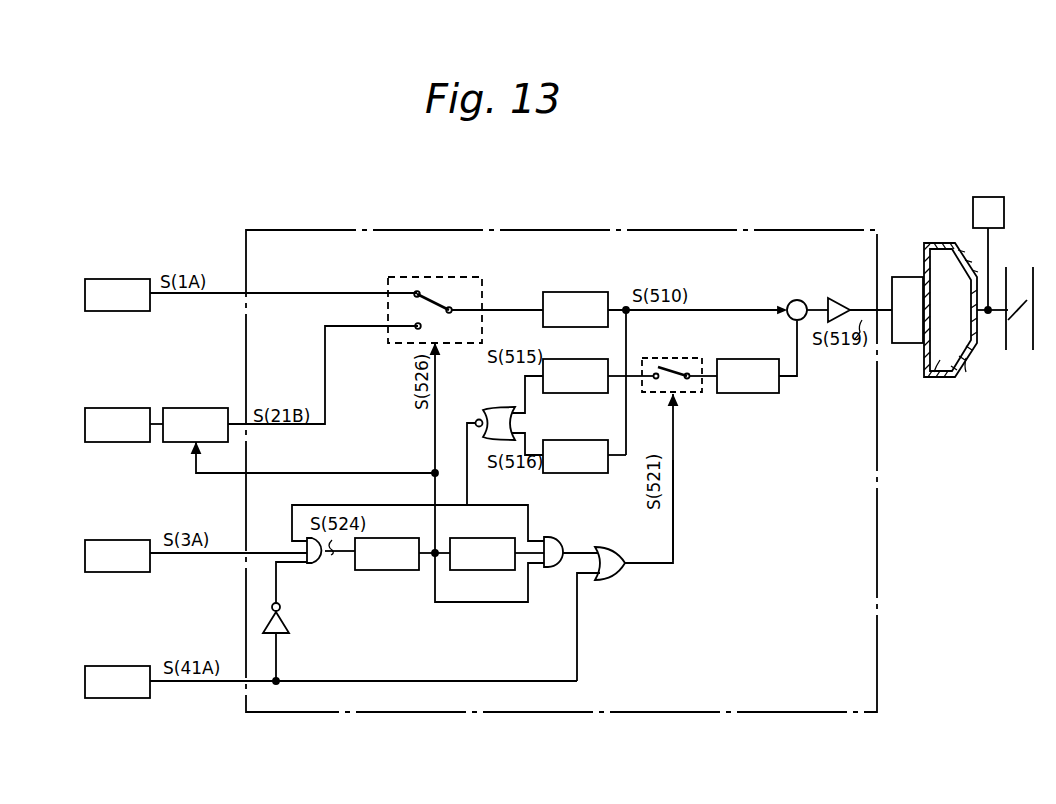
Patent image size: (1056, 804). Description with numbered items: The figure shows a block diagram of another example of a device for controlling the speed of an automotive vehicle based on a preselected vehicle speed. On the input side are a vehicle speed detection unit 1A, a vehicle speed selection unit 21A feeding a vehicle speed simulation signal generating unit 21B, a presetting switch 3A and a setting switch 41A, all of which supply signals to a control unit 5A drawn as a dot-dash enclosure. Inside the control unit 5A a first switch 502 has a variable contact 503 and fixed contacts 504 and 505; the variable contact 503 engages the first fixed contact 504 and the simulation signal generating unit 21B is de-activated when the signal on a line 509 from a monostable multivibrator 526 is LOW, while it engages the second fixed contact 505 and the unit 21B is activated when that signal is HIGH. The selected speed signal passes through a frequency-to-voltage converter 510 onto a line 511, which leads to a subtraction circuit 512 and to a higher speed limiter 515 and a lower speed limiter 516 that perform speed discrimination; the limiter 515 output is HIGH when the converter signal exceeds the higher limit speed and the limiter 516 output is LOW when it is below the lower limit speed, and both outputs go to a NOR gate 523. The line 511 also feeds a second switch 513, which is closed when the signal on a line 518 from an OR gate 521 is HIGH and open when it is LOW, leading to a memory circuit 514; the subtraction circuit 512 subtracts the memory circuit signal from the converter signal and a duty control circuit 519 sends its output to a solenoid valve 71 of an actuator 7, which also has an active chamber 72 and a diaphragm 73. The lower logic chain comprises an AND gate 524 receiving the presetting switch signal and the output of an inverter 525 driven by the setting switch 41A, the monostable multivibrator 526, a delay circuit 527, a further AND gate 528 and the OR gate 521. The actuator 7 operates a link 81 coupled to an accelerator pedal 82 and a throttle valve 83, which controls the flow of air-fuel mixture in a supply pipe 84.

The vehicle speed detection unit 1A is at (124, 279).
The vehicle speed selection unit 21A is at (115, 408).
The vehicle speed simulation signal generating unit 21B is at (194, 408).
The presetting switch 3A is at (122, 540).
The setting switch 41A is at (138, 654).
The control unit 5A is at (504, 230).
The first switch 502 is at (443, 280).
The variable contact 503 is at (455, 308).
The first fixed contact 504 is at (415, 290).
The second fixed contact 505 is at (414, 328).
The line 509 is at (426, 492).
The frequency-to-voltage converter 510 is at (582, 292).
The line 511 is at (710, 306).
The subtraction circuit 512 is at (797, 300).
The second switch 513 is at (650, 356).
The memory circuit 514 is at (745, 359).
The higher speed limiter 515 is at (571, 390).
The lower speed limiter 516 is at (558, 443).
The line 518 is at (674, 468).
The duty control circuit 519 is at (843, 298).
The OR gate 521 is at (612, 548).
The NOR gate 523 is at (494, 409).
The AND gate 524 is at (314, 565).
The inverter 525 is at (289, 625).
The monostable multivibrator 526 is at (394, 572).
The delay circuit 527 is at (454, 538).
The AND gate 528 is at (556, 538).
The actuator 7 is at (924, 243).
The solenoid valve 71 is at (902, 277).
The active chamber 72 is at (934, 378).
The diaphragm 73 is at (967, 378).
The link 81 is at (998, 310).
The accelerator pedal 82 is at (988, 197).
The throttle valve 83 is at (1014, 299).
The supply pipe 84 is at (1010, 350).